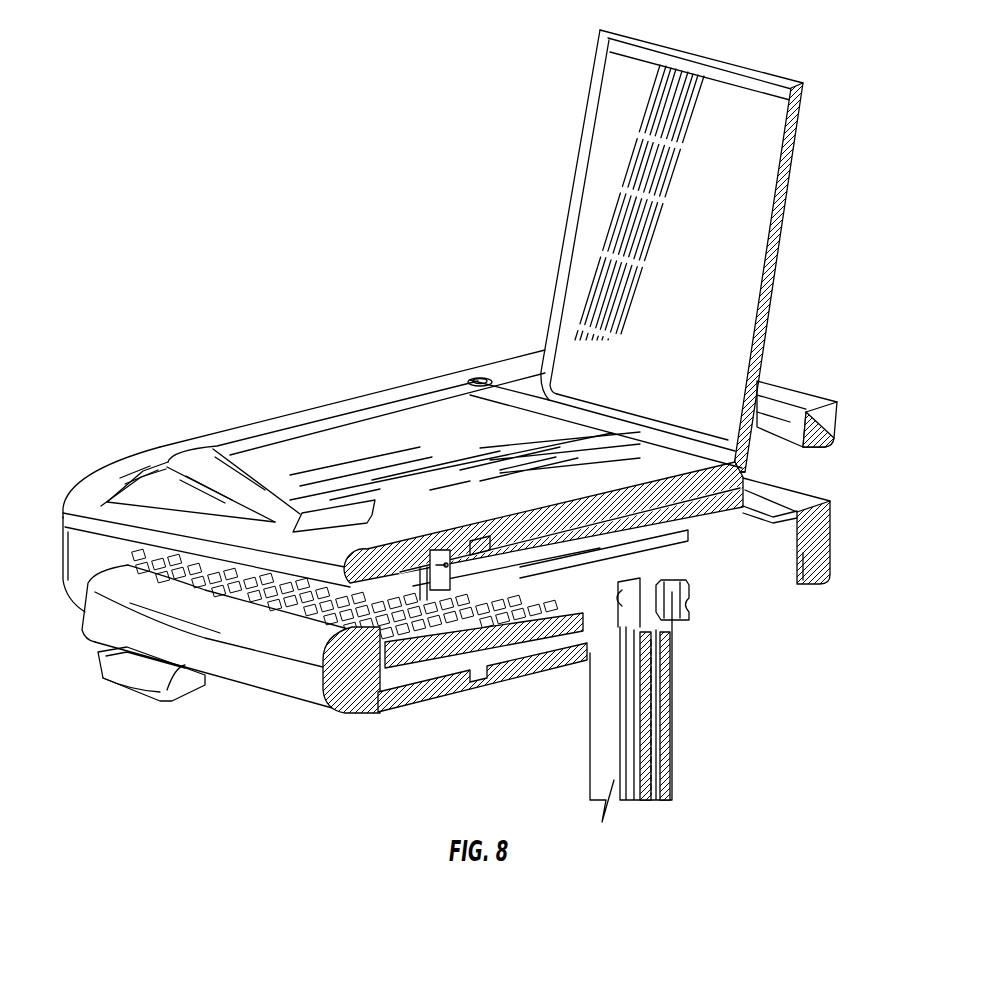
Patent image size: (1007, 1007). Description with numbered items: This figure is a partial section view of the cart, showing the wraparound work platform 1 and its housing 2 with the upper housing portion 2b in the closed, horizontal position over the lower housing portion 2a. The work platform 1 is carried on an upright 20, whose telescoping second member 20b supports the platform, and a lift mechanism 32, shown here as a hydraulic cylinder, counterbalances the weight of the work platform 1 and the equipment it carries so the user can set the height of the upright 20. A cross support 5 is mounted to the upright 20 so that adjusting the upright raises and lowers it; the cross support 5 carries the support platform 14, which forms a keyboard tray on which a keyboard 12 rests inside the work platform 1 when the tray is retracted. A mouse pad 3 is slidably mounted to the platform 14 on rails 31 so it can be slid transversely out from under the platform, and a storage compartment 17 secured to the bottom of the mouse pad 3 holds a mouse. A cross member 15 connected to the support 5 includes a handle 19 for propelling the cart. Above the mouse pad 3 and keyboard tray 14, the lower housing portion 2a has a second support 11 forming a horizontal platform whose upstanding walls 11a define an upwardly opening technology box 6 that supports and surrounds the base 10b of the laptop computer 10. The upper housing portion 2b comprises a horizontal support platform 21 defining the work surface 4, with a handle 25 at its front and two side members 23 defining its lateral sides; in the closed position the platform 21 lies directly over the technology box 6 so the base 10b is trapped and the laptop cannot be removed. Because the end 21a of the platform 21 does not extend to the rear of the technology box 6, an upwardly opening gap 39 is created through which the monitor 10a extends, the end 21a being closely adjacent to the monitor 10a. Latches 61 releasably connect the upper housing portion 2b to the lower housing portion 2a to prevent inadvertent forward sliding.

The wraparound work platform 1 is at (245, 405).
The housing 2 is at (277, 410).
The lower housing portion 2a is at (483, 712).
The upper housing portion 2b is at (125, 457).
The mouse pad 3 is at (403, 713).
The work surface 4 is at (397, 423).
The cross support 5 is at (687, 617).
The technology box 6 is at (683, 532).
The laptop computer 10 is at (707, 251).
The monitor 10a is at (735, 290).
The base 10b is at (740, 512).
The second support 11 is at (715, 515).
The upstanding walls 11a is at (462, 578).
The keyboard 12 is at (455, 690).
The support platform 14 is at (350, 713).
The cross member 15 is at (830, 550).
The storage compartment 17 is at (133, 700).
The handle 19 is at (795, 396).
The upright 20 is at (641, 707).
The second member 20b is at (600, 753).
The support platform 21 is at (560, 500).
The end of support platform 21a is at (723, 447).
The side members 23 is at (83, 557).
The handle 25 is at (150, 533).
The rails 31 is at (378, 713).
The lift mechanism 32 is at (675, 703).
The gap 39 is at (752, 468).
The latches 61 is at (474, 374).